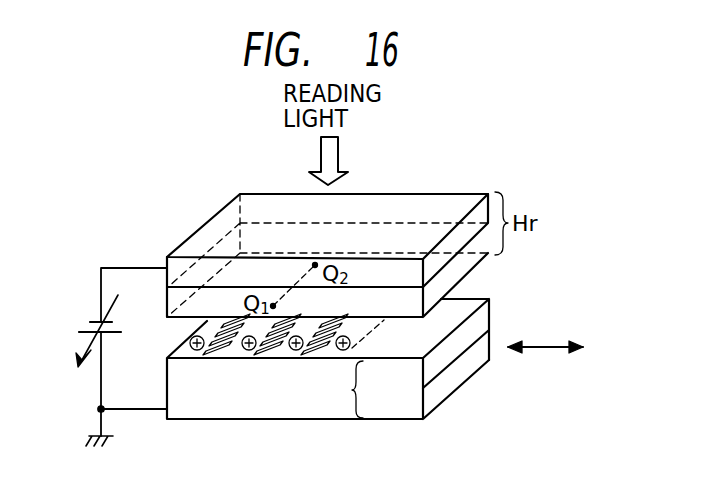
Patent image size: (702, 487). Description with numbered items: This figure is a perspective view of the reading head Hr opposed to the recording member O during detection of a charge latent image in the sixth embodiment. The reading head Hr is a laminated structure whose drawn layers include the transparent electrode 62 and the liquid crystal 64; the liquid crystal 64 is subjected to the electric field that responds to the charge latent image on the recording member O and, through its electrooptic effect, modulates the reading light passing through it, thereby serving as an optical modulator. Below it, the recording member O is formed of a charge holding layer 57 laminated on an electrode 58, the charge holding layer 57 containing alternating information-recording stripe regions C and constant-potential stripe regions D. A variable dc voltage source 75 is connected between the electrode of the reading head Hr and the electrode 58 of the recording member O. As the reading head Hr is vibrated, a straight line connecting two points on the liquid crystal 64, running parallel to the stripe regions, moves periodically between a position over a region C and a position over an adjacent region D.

The transparent electrode 62 is at (213, 232).
The liquid crystal 64 is at (162, 305).
The variable dc voltage source 75 is at (92, 317).
The charge holding layer 57 is at (457, 341).
The electrode 58 is at (443, 382).